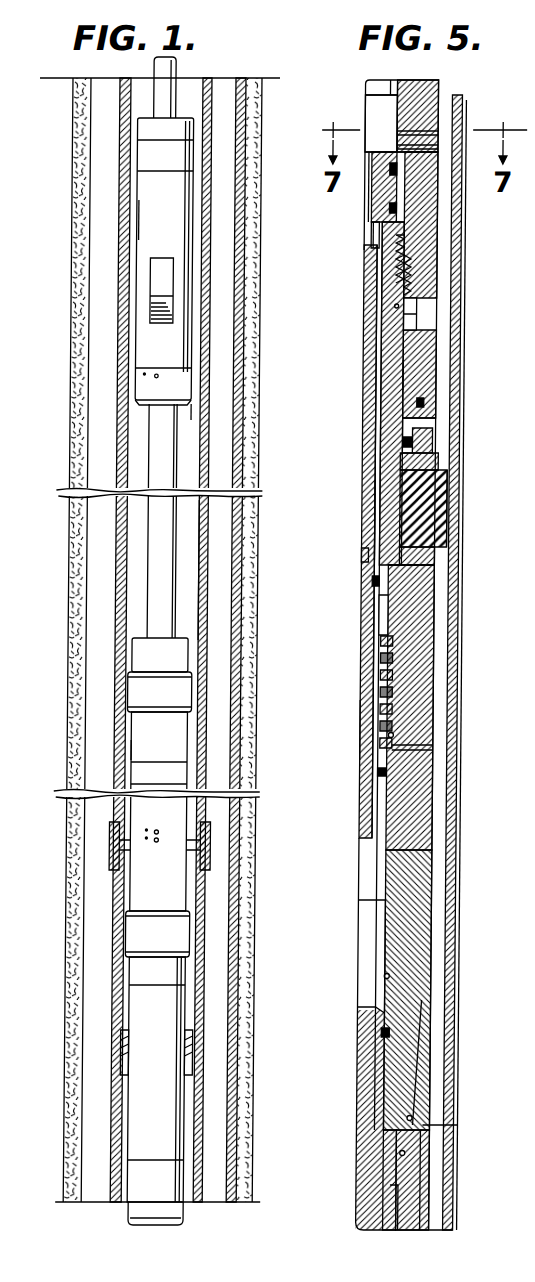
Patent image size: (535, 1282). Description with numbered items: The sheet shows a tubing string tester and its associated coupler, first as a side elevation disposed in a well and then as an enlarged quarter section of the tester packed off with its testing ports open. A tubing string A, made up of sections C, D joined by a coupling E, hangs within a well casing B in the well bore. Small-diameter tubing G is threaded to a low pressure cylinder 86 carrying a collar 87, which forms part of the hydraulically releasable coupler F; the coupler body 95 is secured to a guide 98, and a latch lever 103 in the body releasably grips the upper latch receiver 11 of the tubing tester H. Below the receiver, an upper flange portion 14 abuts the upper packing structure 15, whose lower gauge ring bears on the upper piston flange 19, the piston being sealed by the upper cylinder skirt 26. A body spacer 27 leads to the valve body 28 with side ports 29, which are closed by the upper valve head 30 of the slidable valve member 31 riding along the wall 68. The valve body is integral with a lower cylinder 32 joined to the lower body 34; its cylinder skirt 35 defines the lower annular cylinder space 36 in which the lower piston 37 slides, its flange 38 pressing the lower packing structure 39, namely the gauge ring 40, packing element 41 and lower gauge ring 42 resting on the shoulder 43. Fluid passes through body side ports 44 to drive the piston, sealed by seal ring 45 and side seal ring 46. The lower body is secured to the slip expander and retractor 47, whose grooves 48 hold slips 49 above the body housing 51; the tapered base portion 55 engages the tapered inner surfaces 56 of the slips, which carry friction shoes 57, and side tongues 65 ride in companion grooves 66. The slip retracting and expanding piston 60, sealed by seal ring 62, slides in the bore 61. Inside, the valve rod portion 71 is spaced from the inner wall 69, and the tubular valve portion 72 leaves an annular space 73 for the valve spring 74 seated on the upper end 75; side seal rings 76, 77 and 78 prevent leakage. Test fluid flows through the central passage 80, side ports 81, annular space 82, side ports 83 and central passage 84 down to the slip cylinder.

In FIG. 1, the upper latch receiver 11 is at (161, 526).
In FIG. 1, the upper head or flange portion 14 is at (145, 656).
In FIG. 1, the upper packing structure 15 is at (202, 690).
In FIG. 1, the upper piston flange 19 is at (144, 718).
In FIG. 1, the upper cylinder skirt 26 is at (144, 750).
In FIG. 1, the body spacer 27 is at (178, 781).
In FIG. 1, the valve body 28 is at (150, 880).
In FIG. 5, the valve body 28 is at (418, 93).
In FIG. 5, the side ports 29 is at (433, 147).
In FIG. 5, the upper valve head portion 30 is at (388, 190).
In FIG. 5, the slidable valve member 31 is at (395, 348).
In FIG. 5, the lower cylinder 32 is at (411, 291).
In FIG. 1, the lower body 34 is at (148, 973).
In FIG. 5, the lower body 34 is at (412, 673).
In FIG. 5, the cylinder skirt 35 is at (428, 366).
In FIG. 5, the lower annular cylinder space 36 is at (415, 310).
In FIG. 5, the lower piston 37 is at (397, 373).
In FIG. 5, the lower outwardly directed flange 38 is at (425, 441).
In FIG. 1, the lower packing structure 39 is at (175, 933).
In FIG. 5, the lower packing structure 39 is at (457, 496).
In FIG. 5, the gauge ring 40 is at (429, 464).
In FIG. 5, the lower packing element 41 is at (425, 525).
In FIG. 5, the lower gauge ring 42 is at (422, 558).
In FIG. 5, the lower body shoulder 43 is at (416, 580).
In FIG. 5, the body side ports 44 is at (392, 308).
In FIG. 5, the seal ring 45 is at (408, 445).
In FIG. 5, the side seal ring 46 is at (417, 403).
In FIG. 1, the slip expander and retractor 47 is at (144, 1130).
In FIG. 5, the slip expander and retractor 47 is at (417, 919).
In FIG. 5, the longitudinally extending grooves 48 is at (431, 1125).
In FIG. 1, the slips 49 is at (133, 1052).
In FIG. 5, the slips 49 is at (419, 1223).
In FIG. 1, the body housing 51 is at (150, 1209).
In FIG. 5, the base portion 55 is at (416, 1118).
In FIG. 5, the tapered inner surfaces 56 is at (414, 1153).
In FIG. 5, the friction shoes 57 is at (434, 1196).
In FIG. 5, the slip retracting and expanding piston 60 is at (381, 1063).
In FIG. 5, the bore 61 is at (397, 976).
In FIG. 5, the seal ring 62 is at (399, 1033).
In FIG. 5, the side tongues 65 is at (409, 1206).
In FIG. 5, the companion grooves 66 is at (433, 1069).
In FIG. 5, the wall 68 is at (405, 230).
In FIG. 5, the inner wall 69 is at (379, 516).
In FIG. 5, the valve rod portion 71 is at (376, 284).
In FIG. 5, the tubular valve portion 72 is at (373, 724).
In FIG. 5, the annular space 73 is at (400, 737).
In FIG. 5, the valve spring 74 is at (387, 654).
In FIG. 5, the upper end 75 is at (399, 772).
In FIG. 5, the side seal rings 76 is at (397, 208).
In FIG. 5, the side seal ring 77 is at (379, 581).
In FIG. 5, the side seal ring 78 is at (390, 777).
In FIG. 5, the central passage 80 is at (392, 140).
In FIG. 5, the side ports 81 is at (375, 236).
In FIG. 5, the annular space 82 is at (403, 262).
In FIG. 5, the side ports 83 is at (374, 553).
In FIG. 5, the central passage 84 is at (366, 634).
In FIG. 1, the low pressure cylinder 86 is at (178, 157).
In FIG. 1, the collar 87 is at (152, 134).
In FIG. 1, the coupler body 95 is at (155, 224).
In FIG. 1, the guide 98 is at (153, 386).
In FIG. 1, the latch lever 103 is at (160, 287).
In FIG. 1, the tubing string A is at (206, 403).
In FIG. 1, the well casing B is at (243, 194).
In FIG. 1, the tubing section C is at (207, 578).
In FIG. 1, the tubing section D is at (206, 1009).
In FIG. 5, the tubing section D is at (457, 411).
In FIG. 1, the coupling E is at (214, 845).
In FIG. 1, the hydraulically releasable coupler F is at (194, 301).
In FIG. 1, the tubing G is at (168, 69).
In FIG. 1, the tubing tester H is at (178, 751).